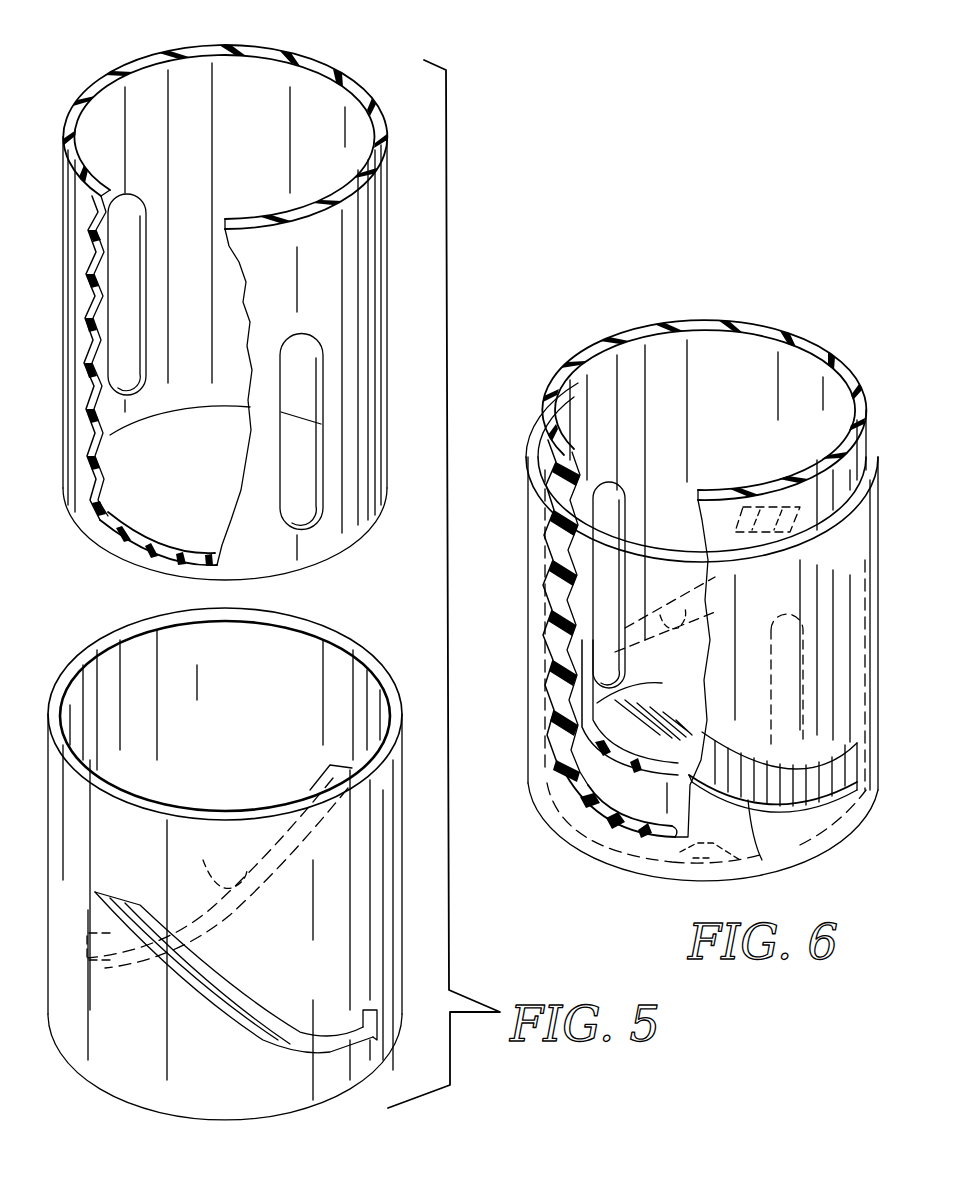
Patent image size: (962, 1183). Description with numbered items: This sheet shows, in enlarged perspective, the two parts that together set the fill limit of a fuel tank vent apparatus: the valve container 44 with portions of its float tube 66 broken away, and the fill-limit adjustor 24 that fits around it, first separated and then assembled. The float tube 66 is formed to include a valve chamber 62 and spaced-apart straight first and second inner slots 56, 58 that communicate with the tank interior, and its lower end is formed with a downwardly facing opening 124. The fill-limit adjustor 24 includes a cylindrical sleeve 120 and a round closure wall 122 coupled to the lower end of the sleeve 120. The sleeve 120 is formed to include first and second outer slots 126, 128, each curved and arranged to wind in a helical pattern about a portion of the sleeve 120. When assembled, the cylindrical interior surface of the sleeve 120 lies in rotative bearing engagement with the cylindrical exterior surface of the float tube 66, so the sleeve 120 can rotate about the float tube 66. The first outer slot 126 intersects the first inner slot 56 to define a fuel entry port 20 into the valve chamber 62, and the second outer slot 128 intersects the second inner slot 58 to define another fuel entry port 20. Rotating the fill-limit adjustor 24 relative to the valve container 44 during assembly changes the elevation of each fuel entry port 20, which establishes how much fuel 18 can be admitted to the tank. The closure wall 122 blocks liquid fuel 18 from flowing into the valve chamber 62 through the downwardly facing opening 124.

In FIG. 6, the fuel 18 is at (653, 675).
In FIG. 6, the fuel entry port 20 is at (667, 668).
In FIG. 5, the fill-limit adjustor 24 is at (77, 1087).
In FIG. 5, the valve container 44 is at (102, 82).
In FIG. 6, the valve container 44 is at (573, 353).
In FIG. 5, the first inner slot 56 is at (307, 446).
In FIG. 6, the first inner slot 56 is at (784, 650).
In FIG. 5, the second inner slot 58 is at (136, 298).
In FIG. 6, the second inner slot 58 is at (615, 528).
In FIG. 5, the valve chamber 62 is at (313, 107).
In FIG. 6, the valve chamber 62 is at (750, 370).
In FIG. 5, the float tube 66 is at (373, 252).
In FIG. 6, the float tube 66 is at (667, 360).
In FIG. 5, the cylindrical sleeve 120 is at (370, 915).
In FIG. 6, the closure wall 122 is at (660, 733).
In FIG. 5, the downwardly facing opening 124 is at (157, 412).
In FIG. 6, the downwardly facing opening 124 is at (656, 872).
In FIG. 5, the first outer slot 126 is at (310, 1028).
In FIG. 6, the first outer slot 126 is at (763, 850).
In FIG. 5, the second outer slot 128 is at (222, 892).
In FIG. 6, the second outer slot 128 is at (672, 612).